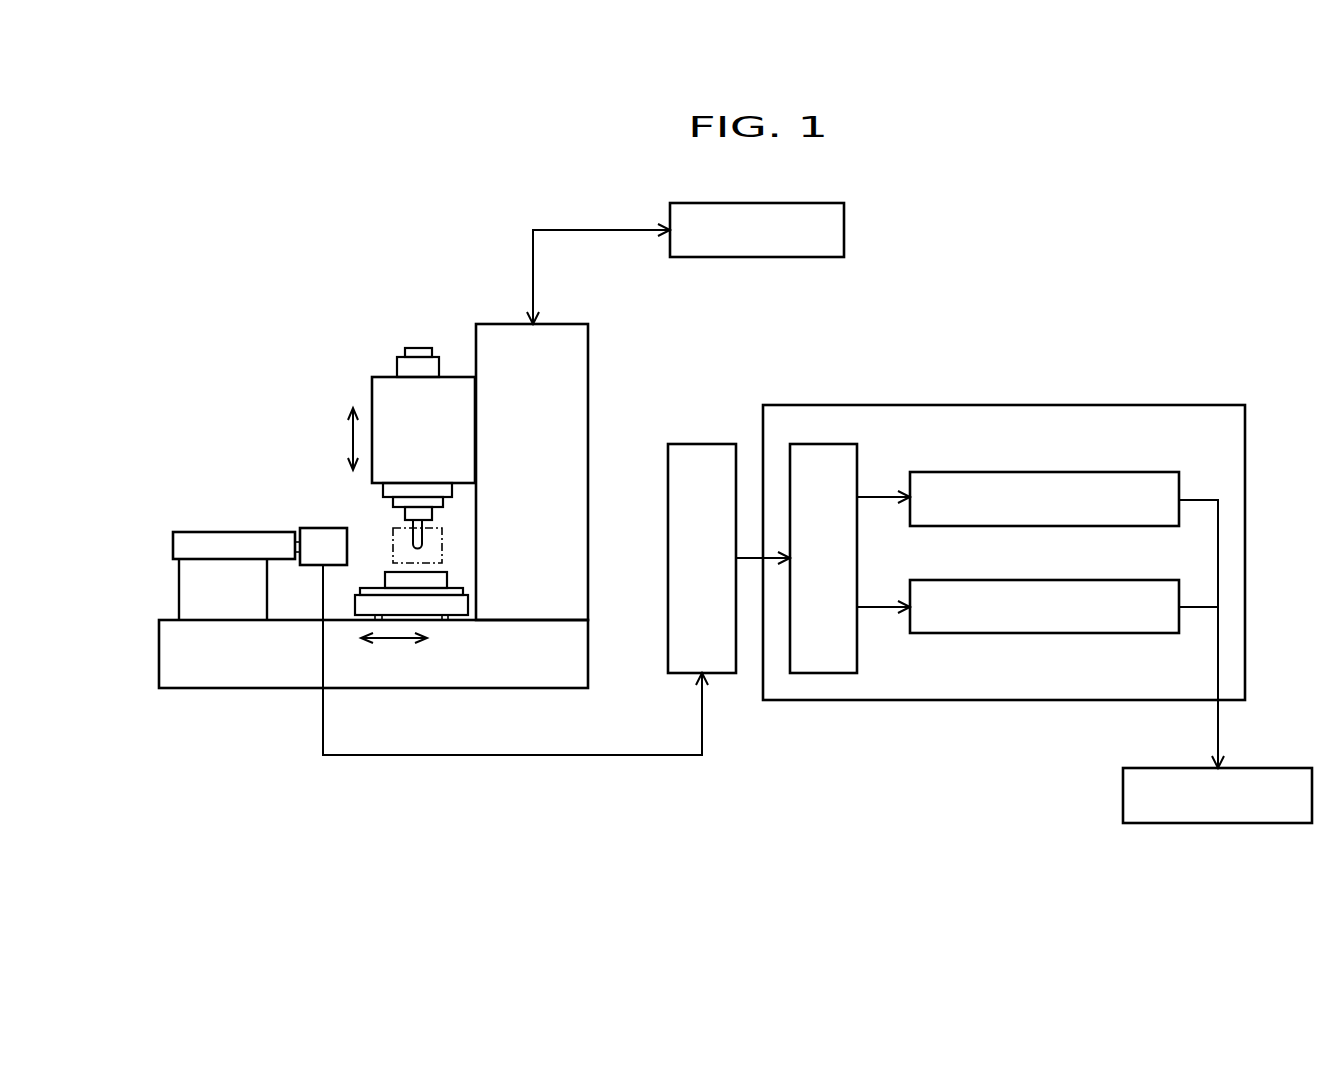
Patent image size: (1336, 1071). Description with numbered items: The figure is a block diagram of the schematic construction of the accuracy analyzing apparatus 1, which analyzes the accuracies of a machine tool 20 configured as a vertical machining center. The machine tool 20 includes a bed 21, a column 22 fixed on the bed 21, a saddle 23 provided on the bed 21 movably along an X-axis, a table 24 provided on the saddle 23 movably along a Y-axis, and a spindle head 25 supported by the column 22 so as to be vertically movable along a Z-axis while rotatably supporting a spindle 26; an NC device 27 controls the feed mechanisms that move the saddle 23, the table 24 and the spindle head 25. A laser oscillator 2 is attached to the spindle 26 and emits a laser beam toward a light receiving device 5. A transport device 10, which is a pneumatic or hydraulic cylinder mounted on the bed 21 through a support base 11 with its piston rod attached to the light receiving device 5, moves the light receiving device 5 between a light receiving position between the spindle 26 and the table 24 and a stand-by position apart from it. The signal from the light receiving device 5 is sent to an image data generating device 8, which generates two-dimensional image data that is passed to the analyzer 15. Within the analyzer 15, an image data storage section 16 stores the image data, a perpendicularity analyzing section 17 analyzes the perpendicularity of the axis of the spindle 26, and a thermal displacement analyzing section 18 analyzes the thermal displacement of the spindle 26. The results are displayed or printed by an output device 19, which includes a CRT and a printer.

The accuracy analyzing apparatus 1 is at (815, 800).
The laser oscillator 2 is at (442, 532).
The light receiving device 5 is at (322, 530).
The image data generating device 8 is at (702, 444).
The transport device 10 is at (233, 533).
The support base 11 is at (188, 593).
The analyzer 15 is at (1247, 533).
The image data storage section 16 is at (825, 444).
The perpendicularity analyzing section 17 is at (998, 472).
The thermal displacement analyzing section 18 is at (998, 633).
The output device 19 is at (1123, 795).
The machine tool 20 is at (342, 312).
The bed 21 is at (227, 686).
The column 22 is at (500, 325).
The saddle 23 is at (460, 615).
The table 24 is at (447, 580).
The spindle head 25 is at (377, 397).
The spindle 26 is at (413, 488).
The NC device 27 is at (844, 230).